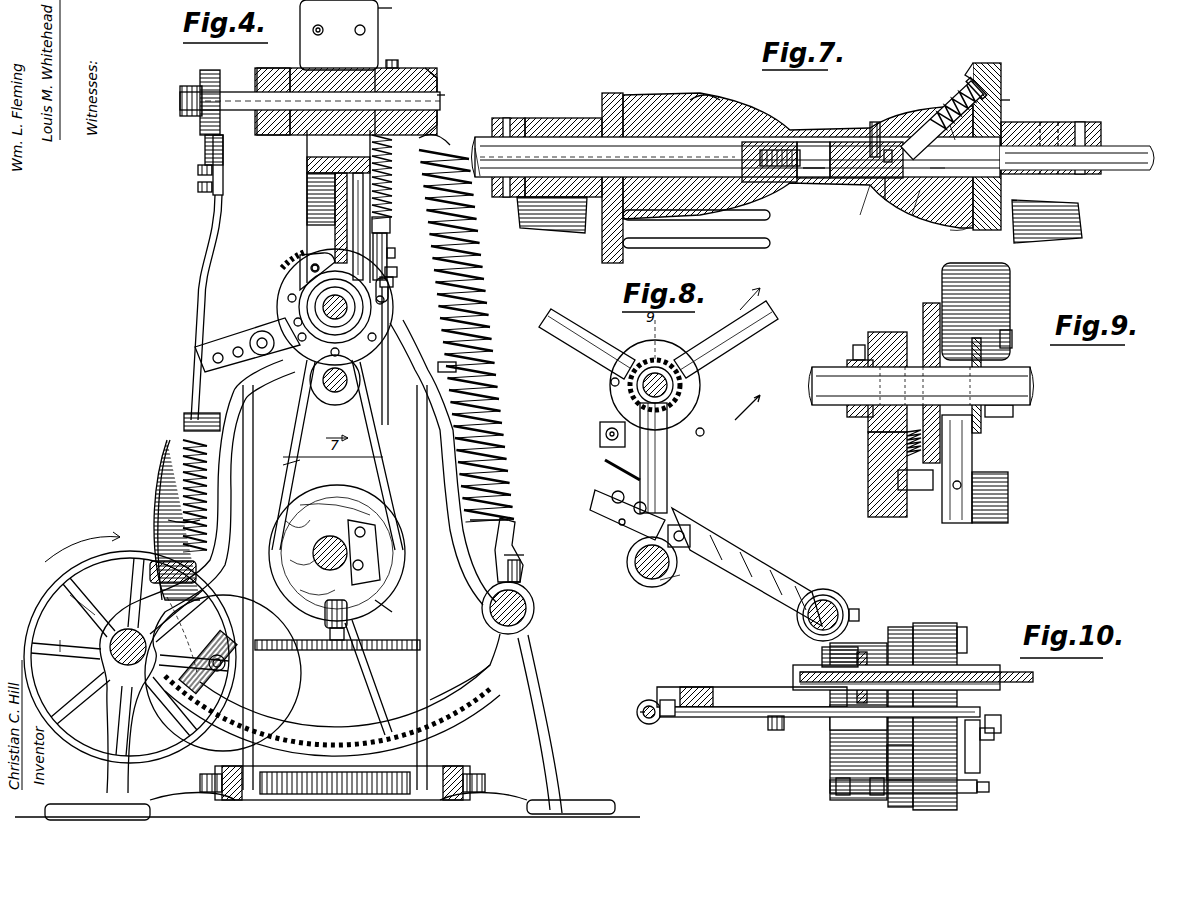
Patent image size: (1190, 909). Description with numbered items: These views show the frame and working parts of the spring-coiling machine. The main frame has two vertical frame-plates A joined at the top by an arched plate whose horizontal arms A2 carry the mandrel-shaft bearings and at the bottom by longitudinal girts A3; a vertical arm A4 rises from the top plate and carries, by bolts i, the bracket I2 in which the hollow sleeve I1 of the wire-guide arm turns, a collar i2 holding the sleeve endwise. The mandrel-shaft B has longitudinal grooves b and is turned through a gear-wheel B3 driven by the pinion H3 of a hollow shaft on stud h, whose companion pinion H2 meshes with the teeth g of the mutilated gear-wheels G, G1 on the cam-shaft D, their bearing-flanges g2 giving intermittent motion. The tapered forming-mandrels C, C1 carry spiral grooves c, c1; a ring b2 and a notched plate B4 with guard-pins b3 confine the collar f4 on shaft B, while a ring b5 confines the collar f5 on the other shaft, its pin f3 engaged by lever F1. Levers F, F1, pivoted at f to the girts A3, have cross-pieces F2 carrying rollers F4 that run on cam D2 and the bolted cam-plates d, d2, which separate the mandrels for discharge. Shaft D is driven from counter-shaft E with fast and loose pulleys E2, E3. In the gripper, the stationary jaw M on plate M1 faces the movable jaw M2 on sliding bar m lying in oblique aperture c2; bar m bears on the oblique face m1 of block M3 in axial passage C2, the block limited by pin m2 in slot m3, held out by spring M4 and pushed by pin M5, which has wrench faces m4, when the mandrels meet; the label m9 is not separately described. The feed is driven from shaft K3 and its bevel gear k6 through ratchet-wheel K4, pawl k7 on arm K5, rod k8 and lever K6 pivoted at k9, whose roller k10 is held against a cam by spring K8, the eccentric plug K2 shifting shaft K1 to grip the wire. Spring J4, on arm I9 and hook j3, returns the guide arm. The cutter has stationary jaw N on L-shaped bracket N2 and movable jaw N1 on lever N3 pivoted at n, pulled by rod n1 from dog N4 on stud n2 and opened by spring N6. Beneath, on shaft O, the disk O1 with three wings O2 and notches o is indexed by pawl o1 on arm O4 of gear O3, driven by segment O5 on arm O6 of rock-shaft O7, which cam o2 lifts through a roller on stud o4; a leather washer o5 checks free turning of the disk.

In FIG. 4, the frame A is at (327, 570).
In FIG. 10, the frame A is at (830, 762).
In FIG. 4, the bracket / shaft A2 is at (338, 206).
In FIG. 10, the bracket / shaft A2 is at (776, 672).
In FIG. 4, the tie bar A3 is at (222, 774).
In FIG. 4, the upper bracket A4 is at (394, 7).
In FIG. 7, the shaft B is at (482, 142).
In FIG. 10, the shaft B is at (792, 664).
In FIG. 10, the hub B3 is at (878, 644).
In FIG. 4, the flange B4 is at (306, 270).
In FIG. 7, the flange B4 is at (612, 92).
In FIG. 7, the shaft end b is at (498, 172).
In FIG. 7, the collar b2 is at (520, 118).
In FIG. 4, the rod b3 is at (312, 275).
In FIG. 7, the rod b3 is at (752, 248).
In FIG. 7, the collar b5 is at (1090, 122).
In FIG. 4, the cam disc / sleeve C is at (390, 312).
In FIG. 7, the cam disc / sleeve C is at (738, 126).
In FIG. 7, the sleeve section C1 is at (909, 213).
In FIG. 7, the sleeve section C2 is at (860, 210).
In FIG. 4, the hub c is at (322, 308).
In FIG. 7, the hub c is at (703, 95).
In FIG. 7, the sleeve lip c1 is at (952, 232).
In FIG. 7, the sleeve groove c2 is at (826, 216).
In FIG. 4, the disc D is at (315, 555).
In FIG. 8, the disc D is at (627, 564).
In FIG. 4, the disc face D2 is at (334, 515).
In FIG. 4, the lever d is at (402, 548).
In FIG. 4, the link d2 is at (390, 615).
In FIG. 4, the flywheel hub E is at (150, 648).
In FIG. 4, the flywheel spoke E2 is at (63, 646).
In FIG. 4, the flywheel spoke E3 is at (82, 602).
In FIG. 4, the lever / collar F is at (370, 458).
In FIG. 7, the lever / collar F is at (530, 215).
In FIG. 7, the collar F1 is at (1082, 236).
In FIG. 4, the nut F2 is at (330, 645).
In FIG. 4, the stud F4 is at (325, 612).
In FIG. 4, the bolt f is at (212, 790).
In FIG. 7, the groove f3 is at (1045, 138).
In FIG. 7, the hub f4 is at (550, 130).
In FIG. 7, the groove f5 is at (1061, 138).
In FIG. 4, the gear segment G is at (323, 758).
In FIG. 10, the gear segment G is at (925, 756).
In FIG. 4, the pawl G1 is at (522, 540).
In FIG. 4, the pinion g is at (222, 720).
In FIG. 4, the sector plate g2 is at (175, 462).
In FIG. 10, the gear H2 is at (940, 626).
In FIG. 4, the gear / lever H3 is at (240, 334).
In FIG. 10, the gear / lever H3 is at (900, 627).
In FIG. 4, the pivot h is at (257, 340).
In FIG. 4, the hub I1 is at (258, 84).
In FIG. 4, the block I2 is at (339, 35).
In FIG. 4, the key I9 is at (397, 54).
In FIG. 4, the pin i is at (313, 30).
In FIG. 4, the collar i2 is at (280, 70).
In FIG. 4, the spring J4 is at (478, 292).
In FIG. 4, the screw j3 is at (540, 563).
In FIG. 4, the sector plate K1 is at (157, 512).
In FIG. 4, the shaft K2 is at (182, 100).
In FIG. 4, the nut K3 is at (306, 97).
In FIG. 4, the gear K4 is at (211, 90).
In FIG. 4, the plate K5 is at (224, 145).
In FIG. 4, the rod K6 is at (212, 245).
In FIG. 4, the spring K8 is at (207, 495).
In FIG. 4, the chamfer k6 is at (436, 76).
In FIG. 4, the bracket k7 is at (205, 142).
In FIG. 4, the nut k8 is at (198, 176).
In FIG. 4, the nut k9 is at (194, 422).
In FIG. 4, the stud k10 is at (173, 572).
In FIG. 7, the block M is at (985, 62).
In FIG. 7, the block face M1 is at (1002, 102).
In FIG. 7, the spring pin M2 is at (968, 104).
In FIG. 7, the block M3 is at (856, 140).
In FIG. 7, the hub M4 is at (1005, 122).
In FIG. 7, the screw block M5 is at (808, 140).
In FIG. 7, the pin m is at (956, 125).
In FIG. 7, the pin m1 is at (945, 174).
In FIG. 7, the pin m2 is at (890, 148).
In FIG. 7, the pin m3 is at (886, 202).
In FIG. 7, the collar m4 is at (800, 180).
In FIG. 7, the pin m9 is at (876, 120).
In FIG. 4, the bar N is at (352, 250).
In FIG. 10, the bar N is at (647, 700).
In FIG. 4, the nut N1 is at (398, 270).
In FIG. 10, the nut N1 is at (672, 716).
In FIG. 4, the lever N2 is at (390, 212).
In FIG. 10, the lever N2 is at (718, 690).
In FIG. 4, the rod N3 is at (388, 246).
In FIG. 10, the rod N3 is at (830, 716).
In FIG. 4, the rod N4 is at (392, 356).
In FIG. 10, the rod N4 is at (980, 752).
In FIG. 4, the spring N6 is at (388, 178).
In FIG. 10, the spring N6 is at (640, 720).
In FIG. 4, the nut n is at (396, 252).
In FIG. 10, the nut n1 is at (1016, 736).
In FIG. 4, the pin n2 is at (394, 286).
In FIG. 10, the pin n2 is at (990, 786).
In FIG. 8, the shaft O is at (670, 360).
In FIG. 9, the shaft O is at (814, 382).
In FIG. 4, the pivot O1 is at (340, 395).
In FIG. 8, the pivot O1 is at (640, 355).
In FIG. 9, the pivot O1 is at (930, 304).
In FIG. 8, the arm O2 is at (575, 326).
In FIG. 9, the arm O2 is at (990, 480).
In FIG. 8, the gear O3 is at (680, 370).
In FIG. 9, the gear O3 is at (886, 332).
In FIG. 8, the bracket O4 is at (610, 422).
In FIG. 8, the block O5 is at (612, 462).
In FIG. 9, the block O5 is at (868, 468).
In FIG. 8, the lever O6 is at (740, 548).
In FIG. 9, the lever O6 is at (1013, 412).
In FIG. 4, the boss O7 is at (528, 608).
In FIG. 8, the boss O7 is at (828, 596).
In FIG. 8, the pin o is at (610, 380).
In FIG. 9, the pin o is at (893, 430).
In FIG. 8, the pin o1 is at (602, 443).
In FIG. 8, the pin o2 is at (612, 522).
In FIG. 9, the spring o4 is at (925, 474).
In FIG. 8, the pin o5 is at (682, 576).